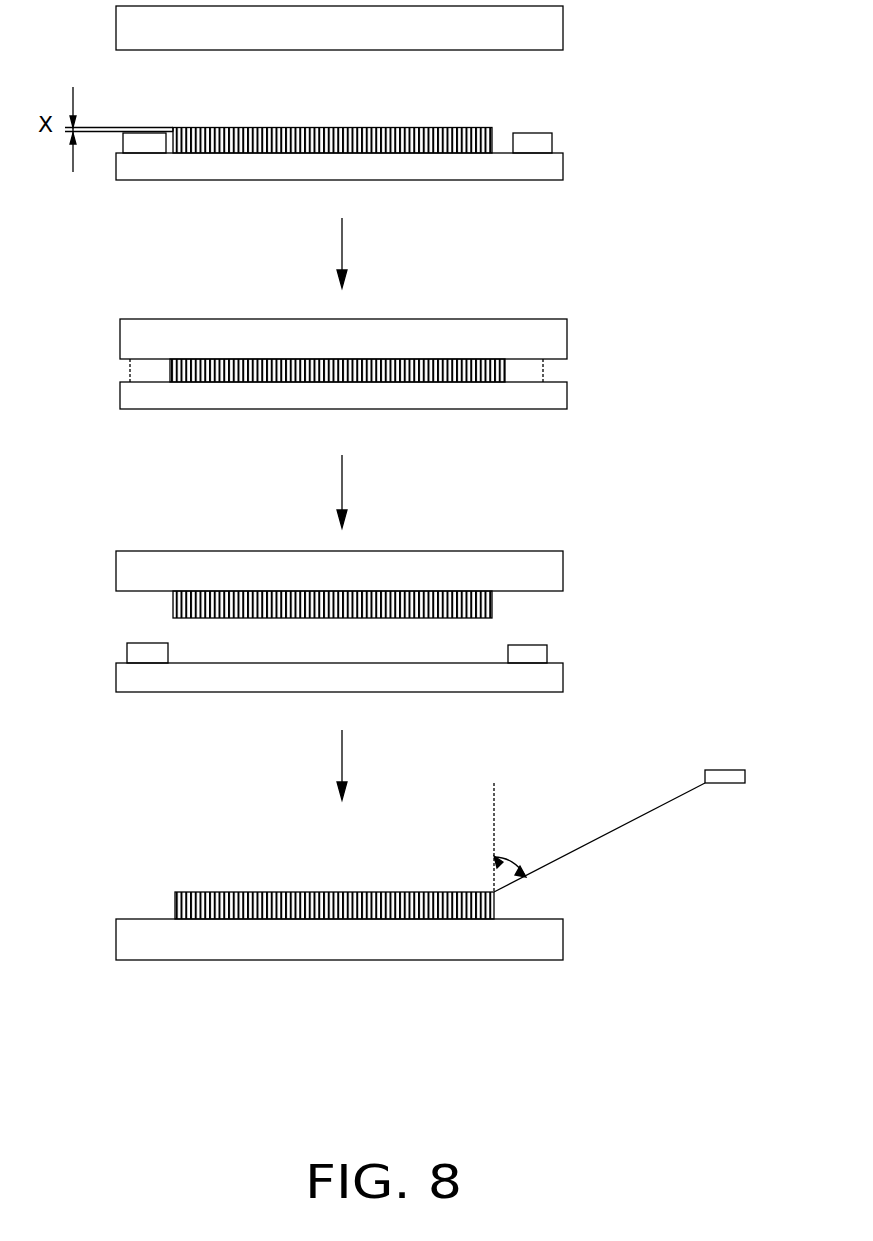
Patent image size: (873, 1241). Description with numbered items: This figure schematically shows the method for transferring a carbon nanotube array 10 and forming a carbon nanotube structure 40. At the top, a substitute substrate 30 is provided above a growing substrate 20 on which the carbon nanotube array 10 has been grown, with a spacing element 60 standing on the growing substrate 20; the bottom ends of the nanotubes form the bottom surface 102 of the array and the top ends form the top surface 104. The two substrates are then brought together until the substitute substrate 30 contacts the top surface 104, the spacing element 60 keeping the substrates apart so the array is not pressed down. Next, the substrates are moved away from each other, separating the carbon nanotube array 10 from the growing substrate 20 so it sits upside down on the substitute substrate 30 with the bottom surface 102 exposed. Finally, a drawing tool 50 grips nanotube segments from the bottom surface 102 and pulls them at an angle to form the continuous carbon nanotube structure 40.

The carbon nanotube array 10 is at (460, 128).
The bottom surface 102 is at (207, 153).
The top surface 104 is at (187, 127).
The growing substrate 20 is at (560, 163).
The substitute substrate 30 is at (563, 27).
The carbon nanotube structure 40 is at (655, 810).
The drawing tool 50 is at (720, 775).
The spacing element 60 is at (542, 136).